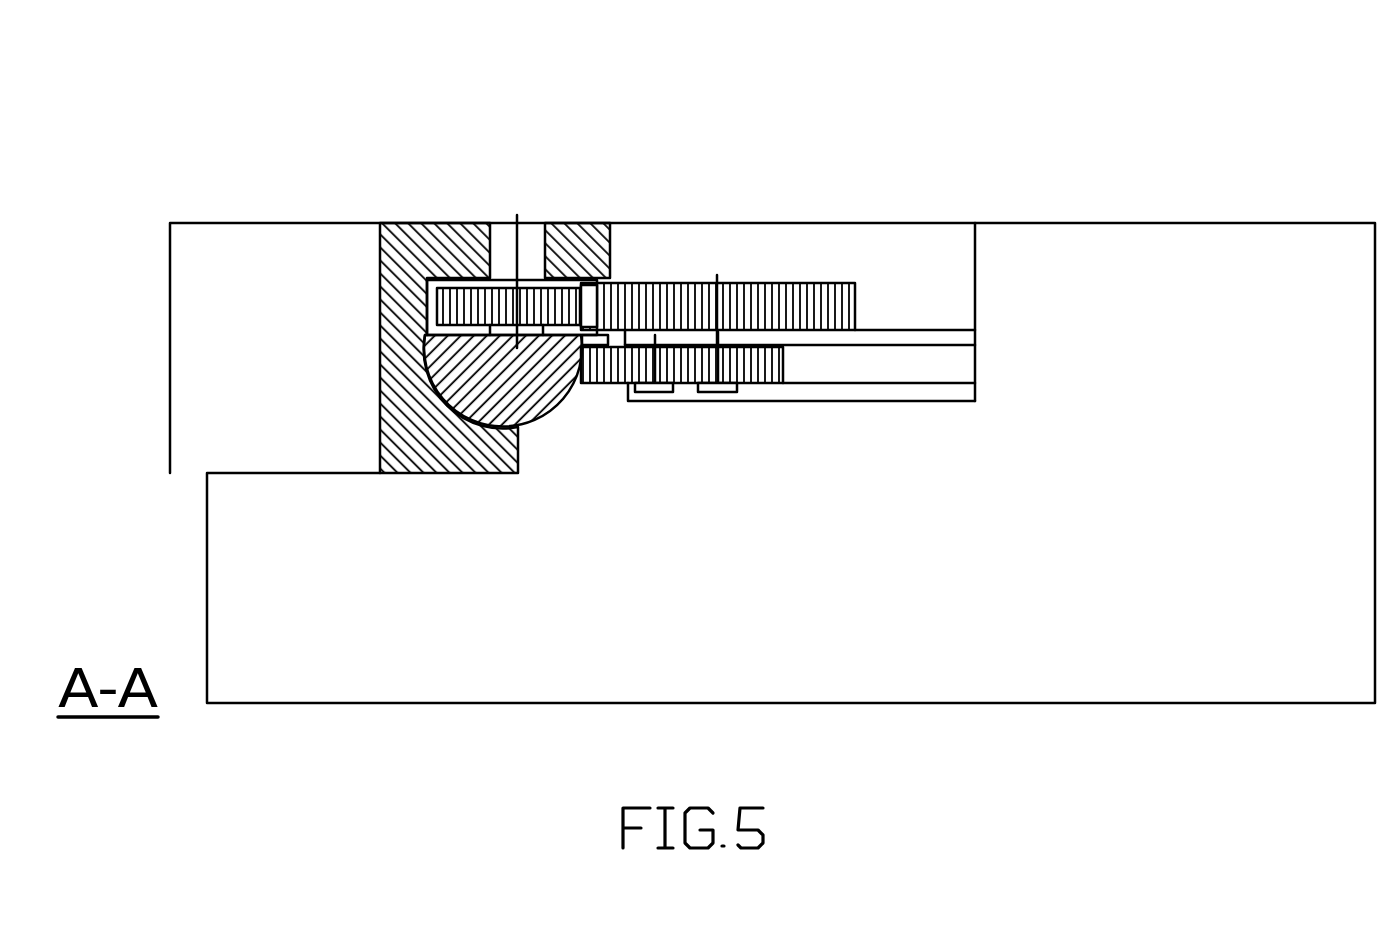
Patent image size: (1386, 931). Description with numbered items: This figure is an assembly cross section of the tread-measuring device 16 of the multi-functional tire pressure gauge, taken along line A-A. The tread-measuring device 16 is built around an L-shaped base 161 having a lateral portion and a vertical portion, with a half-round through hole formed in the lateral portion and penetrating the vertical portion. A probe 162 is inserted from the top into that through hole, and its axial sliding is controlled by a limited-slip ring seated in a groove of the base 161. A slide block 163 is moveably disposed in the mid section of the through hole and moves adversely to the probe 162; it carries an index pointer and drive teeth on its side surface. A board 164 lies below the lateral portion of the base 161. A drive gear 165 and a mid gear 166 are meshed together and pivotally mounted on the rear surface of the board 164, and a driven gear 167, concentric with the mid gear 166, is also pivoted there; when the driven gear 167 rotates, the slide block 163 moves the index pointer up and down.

The tread-measuring device 16 is at (660, 195).
The base 161 is at (413, 232).
The probe 162 is at (535, 398).
The slide block 163 is at (515, 300).
The board 164 is at (905, 335).
The drive gear 165 is at (617, 368).
The mid gear 166 is at (763, 362).
The driven gear 167 is at (810, 300).